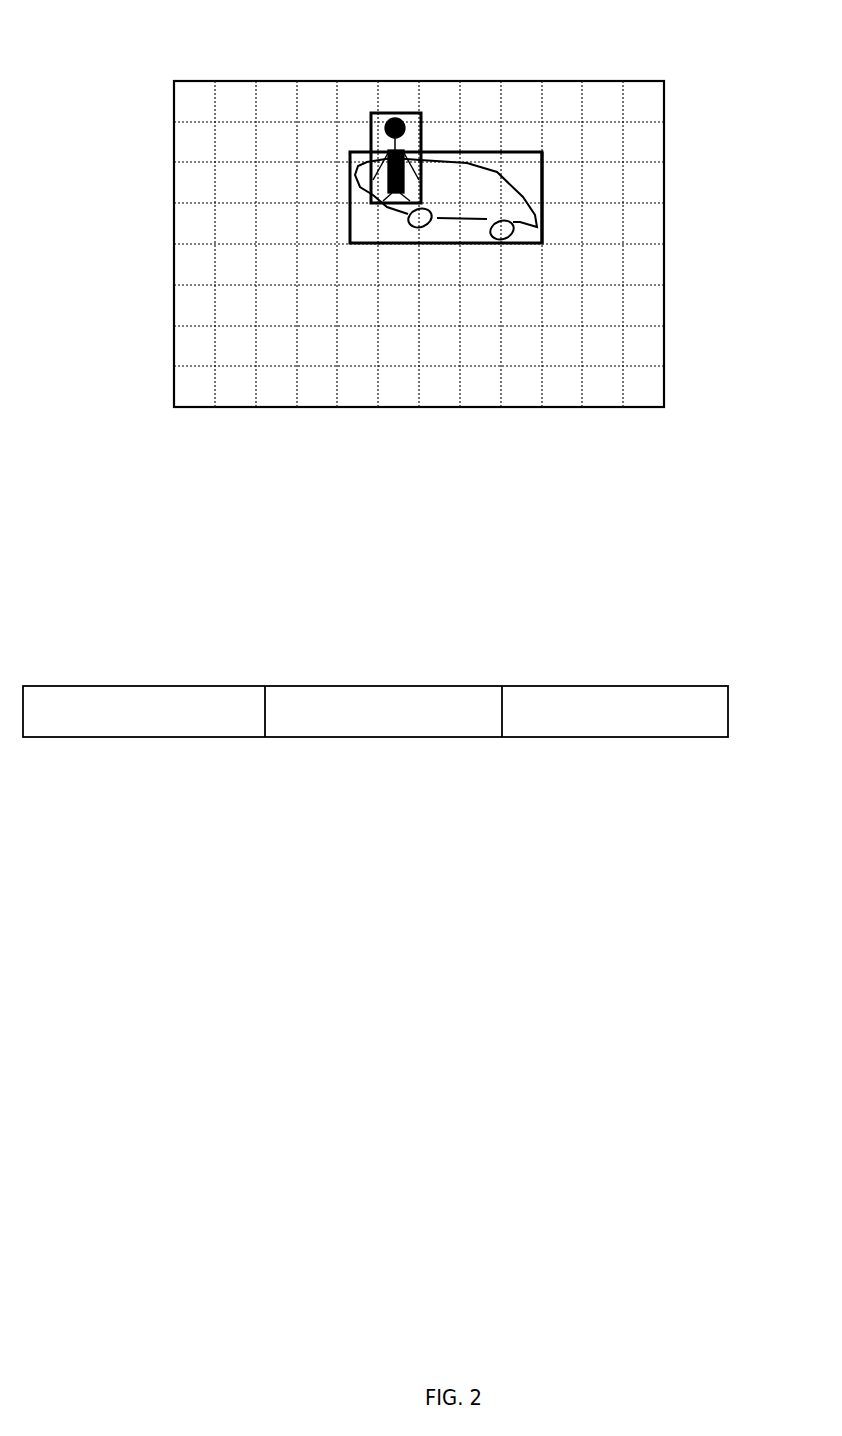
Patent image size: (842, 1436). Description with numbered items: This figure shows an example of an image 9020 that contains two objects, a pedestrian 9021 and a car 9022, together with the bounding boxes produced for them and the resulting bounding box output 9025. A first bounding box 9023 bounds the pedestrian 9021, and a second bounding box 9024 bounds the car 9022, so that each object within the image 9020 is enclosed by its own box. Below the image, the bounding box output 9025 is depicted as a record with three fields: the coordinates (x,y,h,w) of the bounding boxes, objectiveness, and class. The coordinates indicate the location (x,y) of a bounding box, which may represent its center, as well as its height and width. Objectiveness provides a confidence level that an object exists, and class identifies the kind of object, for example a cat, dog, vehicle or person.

The image 9020 is at (518, 458).
The pedestrian 9021 is at (350, 176).
The car 9022 is at (446, 197).
The bounding box 9023 is at (377, 110).
The bounding box 9024 is at (542, 180).
The bounding box output 9025 is at (362, 785).